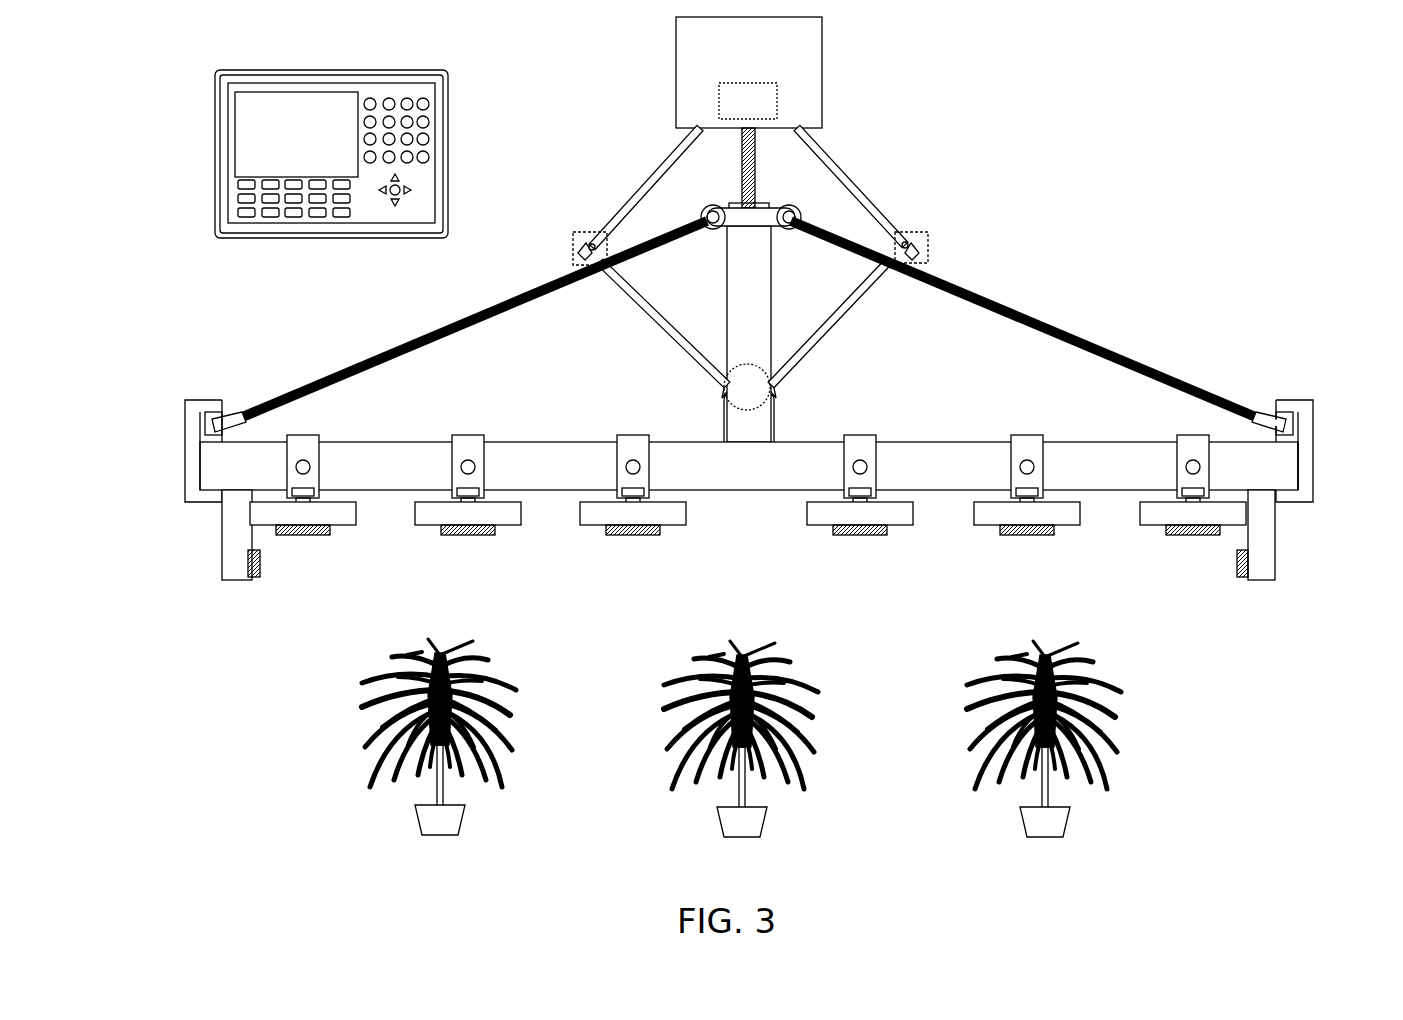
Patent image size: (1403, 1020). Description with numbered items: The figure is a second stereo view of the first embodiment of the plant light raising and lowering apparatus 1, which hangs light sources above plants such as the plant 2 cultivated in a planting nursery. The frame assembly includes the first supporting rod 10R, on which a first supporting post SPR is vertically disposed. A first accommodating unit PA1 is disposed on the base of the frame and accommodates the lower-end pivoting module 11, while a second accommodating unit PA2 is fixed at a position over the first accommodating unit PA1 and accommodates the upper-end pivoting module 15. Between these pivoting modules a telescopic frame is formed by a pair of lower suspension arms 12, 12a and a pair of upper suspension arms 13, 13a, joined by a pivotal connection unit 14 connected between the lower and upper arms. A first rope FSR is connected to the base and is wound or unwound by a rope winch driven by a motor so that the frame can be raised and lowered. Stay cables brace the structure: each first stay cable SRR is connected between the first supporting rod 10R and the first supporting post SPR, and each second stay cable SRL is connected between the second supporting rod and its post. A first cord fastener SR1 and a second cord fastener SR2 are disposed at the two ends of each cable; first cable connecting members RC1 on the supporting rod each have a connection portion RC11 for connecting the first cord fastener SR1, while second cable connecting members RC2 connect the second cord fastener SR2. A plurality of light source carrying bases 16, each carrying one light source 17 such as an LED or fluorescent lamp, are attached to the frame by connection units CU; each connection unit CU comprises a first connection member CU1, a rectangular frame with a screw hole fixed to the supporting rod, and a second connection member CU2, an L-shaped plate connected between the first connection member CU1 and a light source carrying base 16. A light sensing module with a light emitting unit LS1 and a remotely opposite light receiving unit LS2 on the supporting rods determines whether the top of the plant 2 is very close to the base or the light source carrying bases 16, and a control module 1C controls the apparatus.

The plant light raising and lowering apparatus 1 is at (1130, 93).
The control module 1C is at (205, 238).
The plant 2 is at (415, 800).
The first supporting rod 10R is at (928, 482).
The lower-end pivoting module 11 is at (727, 380).
The lower suspension arm 12 is at (616, 298).
The lower suspension arm 12a is at (862, 323).
The upper suspension arm 13 is at (618, 215).
The upper suspension arm 13a is at (885, 225).
The pivotal connection unit 14 is at (573, 243).
The upper-end pivoting module 15 is at (719, 100).
The light source carrying base 16 is at (1150, 515).
The light source 17 is at (1018, 535).
The connection unit CU is at (748, 479).
The first connection member CU1 is at (620, 452).
The second connection member CU2 is at (618, 498).
The first rope FSR is at (742, 160).
The light emitting unit LS1 is at (1240, 580).
The light receiving unit LS2 is at (258, 580).
The first accommodating unit PA1 is at (725, 408).
The second accommodating unit PA2 is at (813, 67).
The first cable connecting member RC1 is at (1322, 404).
The connection portion RC11 is at (1302, 437).
The second cable connecting member RC2 is at (750, 220).
The first supporting post SPR is at (758, 338).
The first cord fastener SR1 is at (1268, 418).
The second cord fastener SR2 is at (777, 213).
The second stay cable SRL is at (360, 360).
The first stay cable SRR is at (1100, 345).